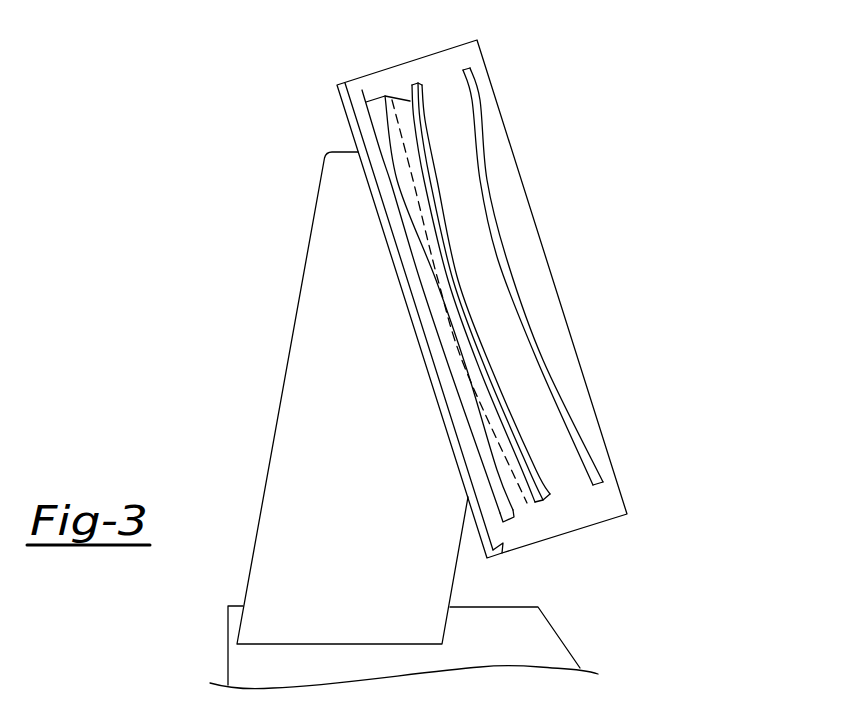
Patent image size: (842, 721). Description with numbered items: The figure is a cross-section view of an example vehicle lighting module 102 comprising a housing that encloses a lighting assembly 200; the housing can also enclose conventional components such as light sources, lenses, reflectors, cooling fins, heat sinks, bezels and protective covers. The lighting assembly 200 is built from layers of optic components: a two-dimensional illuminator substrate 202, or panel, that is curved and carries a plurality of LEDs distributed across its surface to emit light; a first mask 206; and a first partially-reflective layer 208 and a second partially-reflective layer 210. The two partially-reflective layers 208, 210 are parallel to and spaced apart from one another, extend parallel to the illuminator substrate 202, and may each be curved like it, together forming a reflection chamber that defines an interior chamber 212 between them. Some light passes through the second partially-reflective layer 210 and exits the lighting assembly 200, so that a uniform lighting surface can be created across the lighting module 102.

The vehicle lighting module 102 is at (612, 555).
The lighting assembly 200 is at (512, 285).
The illuminator substrate 202 is at (380, 116).
The first mask 206 is at (392, 100).
The first partially-reflective layer 208 is at (425, 92).
The second partially-reflective layer 210 is at (500, 208).
The interior chamber 212 is at (487, 290).